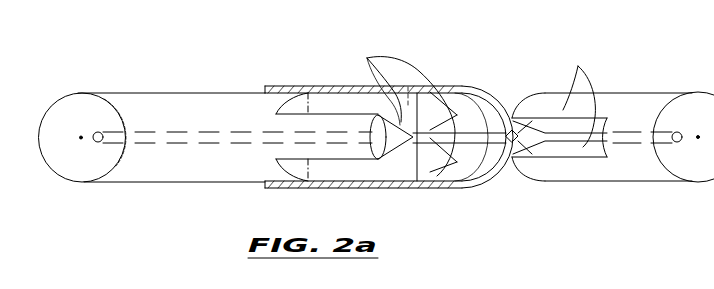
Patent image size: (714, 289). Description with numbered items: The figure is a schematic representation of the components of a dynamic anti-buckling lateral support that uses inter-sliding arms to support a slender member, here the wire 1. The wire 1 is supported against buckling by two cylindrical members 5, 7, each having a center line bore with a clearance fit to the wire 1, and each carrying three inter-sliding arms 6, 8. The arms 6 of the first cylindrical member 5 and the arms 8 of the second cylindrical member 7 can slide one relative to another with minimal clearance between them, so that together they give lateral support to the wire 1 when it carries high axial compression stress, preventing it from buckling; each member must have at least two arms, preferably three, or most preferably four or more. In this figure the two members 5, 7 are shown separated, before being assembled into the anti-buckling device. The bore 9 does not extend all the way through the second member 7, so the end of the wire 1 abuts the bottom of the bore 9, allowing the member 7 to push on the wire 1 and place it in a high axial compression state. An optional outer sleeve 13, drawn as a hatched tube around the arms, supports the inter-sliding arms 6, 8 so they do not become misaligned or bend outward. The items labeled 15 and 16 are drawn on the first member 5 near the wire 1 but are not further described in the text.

The wire 1 is at (494, 94).
The cylindrical member 5 is at (175, 101).
The inter-sliding arms 6 is at (366, 58).
The cylindrical member 7 is at (625, 98).
The inter-sliding arms 8 is at (559, 106).
The bore 9 is at (631, 135).
The outer sleeve 13 is at (277, 90).
The shaft 15 is at (202, 144).
The pin 16 is at (96, 141).